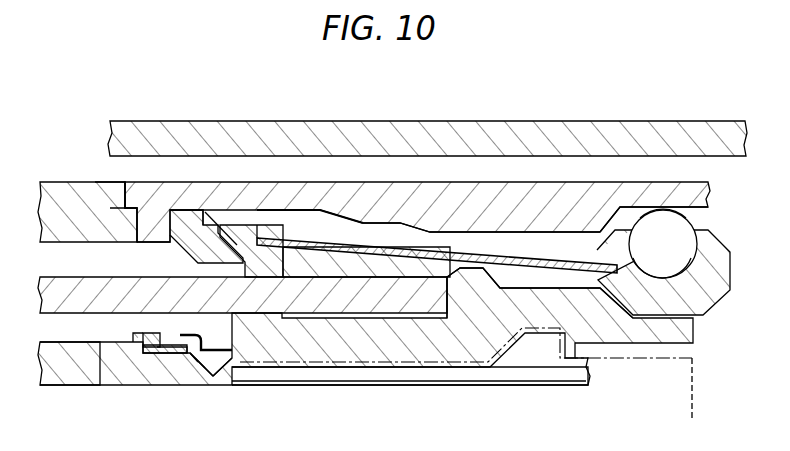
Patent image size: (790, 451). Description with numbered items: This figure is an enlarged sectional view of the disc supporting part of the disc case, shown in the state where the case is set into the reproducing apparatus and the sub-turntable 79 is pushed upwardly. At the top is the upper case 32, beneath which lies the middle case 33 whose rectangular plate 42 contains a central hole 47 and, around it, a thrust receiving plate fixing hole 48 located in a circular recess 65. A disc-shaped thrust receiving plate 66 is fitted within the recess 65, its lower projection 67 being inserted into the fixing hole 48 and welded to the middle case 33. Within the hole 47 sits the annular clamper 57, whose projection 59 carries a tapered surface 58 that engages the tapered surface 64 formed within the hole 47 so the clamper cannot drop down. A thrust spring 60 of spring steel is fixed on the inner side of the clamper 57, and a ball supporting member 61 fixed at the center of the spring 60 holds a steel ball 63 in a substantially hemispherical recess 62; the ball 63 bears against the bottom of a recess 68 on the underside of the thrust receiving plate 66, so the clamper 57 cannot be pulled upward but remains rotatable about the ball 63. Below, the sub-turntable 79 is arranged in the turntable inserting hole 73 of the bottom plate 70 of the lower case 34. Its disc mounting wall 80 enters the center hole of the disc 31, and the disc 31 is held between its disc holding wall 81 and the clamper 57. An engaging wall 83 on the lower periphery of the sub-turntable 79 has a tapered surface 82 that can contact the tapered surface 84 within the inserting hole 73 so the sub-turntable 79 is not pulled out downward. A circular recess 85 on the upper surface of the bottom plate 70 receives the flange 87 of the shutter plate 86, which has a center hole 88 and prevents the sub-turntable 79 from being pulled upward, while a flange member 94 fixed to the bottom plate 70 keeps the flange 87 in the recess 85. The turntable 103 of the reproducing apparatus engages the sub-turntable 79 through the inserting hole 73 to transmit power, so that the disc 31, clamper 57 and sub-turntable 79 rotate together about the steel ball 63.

The upper case 32 is at (190, 129).
The middle case 33 is at (76, 192).
The rectangular plate 42 is at (108, 194).
The circular recess 65 is at (137, 208).
The thrust receiving plate fixing hole 48 is at (142, 214).
The thrust receiving plate 66 is at (185, 207).
The hole 47 is at (222, 230).
The tapered surface 58 is at (235, 214).
The projection 59 is at (296, 202).
The clamper 57 is at (272, 212).
The thrust spring 60 is at (401, 189).
The recess 68 is at (628, 213).
The steel ball 63 is at (663, 219).
The ball supporting member 61 is at (715, 241).
The hemispherical recess 62 is at (684, 276).
The disc mounting wall 80 is at (467, 297).
The disc holding wall 81 is at (272, 300).
The disc 31 is at (85, 280).
The projection 67 is at (146, 246).
The tapered surface 64 is at (206, 243).
The circular recess 85 is at (133, 342).
The flange 87 is at (167, 340).
The lower case 34 is at (88, 375).
The bottom plate 70 is at (127, 372).
The flange member 94 is at (165, 355).
The engaging wall 83 is at (210, 364).
The tapered surface 84 is at (196, 362).
The tapered surface 82 is at (195, 365).
The shutter plate 86 is at (224, 372).
The center hole 88 is at (245, 348).
The turntable inserting hole 73 is at (218, 385).
The sub-turntable 79 is at (450, 360).
The turntable 103 is at (692, 372).